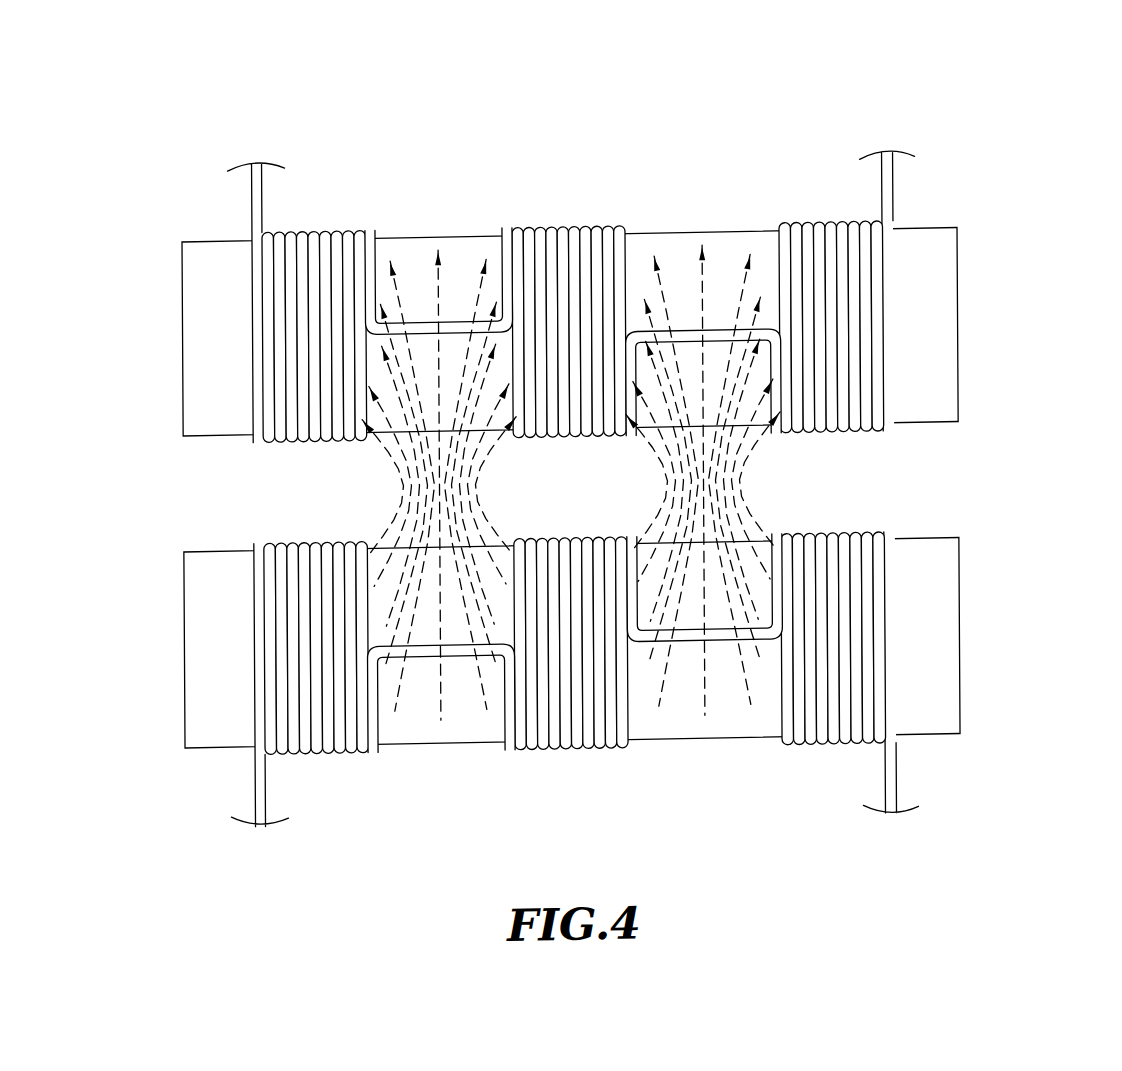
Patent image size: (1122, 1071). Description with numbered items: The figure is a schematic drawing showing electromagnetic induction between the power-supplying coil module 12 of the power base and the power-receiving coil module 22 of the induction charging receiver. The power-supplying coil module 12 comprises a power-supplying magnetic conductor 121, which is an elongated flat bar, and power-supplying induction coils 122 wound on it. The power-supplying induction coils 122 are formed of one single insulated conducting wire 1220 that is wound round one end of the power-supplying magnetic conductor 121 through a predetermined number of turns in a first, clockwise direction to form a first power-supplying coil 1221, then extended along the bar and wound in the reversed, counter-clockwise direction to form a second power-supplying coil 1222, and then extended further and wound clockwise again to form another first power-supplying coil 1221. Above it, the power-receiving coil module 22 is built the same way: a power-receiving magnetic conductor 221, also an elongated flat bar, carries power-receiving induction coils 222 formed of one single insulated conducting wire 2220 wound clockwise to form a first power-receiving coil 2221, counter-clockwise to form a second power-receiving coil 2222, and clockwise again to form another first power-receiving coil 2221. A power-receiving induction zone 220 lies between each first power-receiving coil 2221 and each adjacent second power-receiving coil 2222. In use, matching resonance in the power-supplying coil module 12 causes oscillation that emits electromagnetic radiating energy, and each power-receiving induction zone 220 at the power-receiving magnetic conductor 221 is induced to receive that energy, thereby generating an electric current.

The power-receiving coil module 22 is at (606, 278).
The power-receiving magnetic conductor 221 is at (933, 336).
The power-receiving induction coils 222 is at (519, 267).
The insulated conducting wire 2220 is at (257, 193).
The first power-receiving coil 2221 is at (300, 248).
The second power-receiving coil 2222 is at (540, 247).
The power-receiving induction zone 220 is at (573, 309).
The power-supplying coil module 12 is at (620, 707).
The power-supplying magnetic conductor 121 is at (933, 646).
The power-supplying induction coils 122 is at (532, 708).
The insulated conducting wire 1220 is at (257, 796).
The first power-supplying coil 1221 is at (352, 716).
The second power-supplying coil 1222 is at (565, 718).